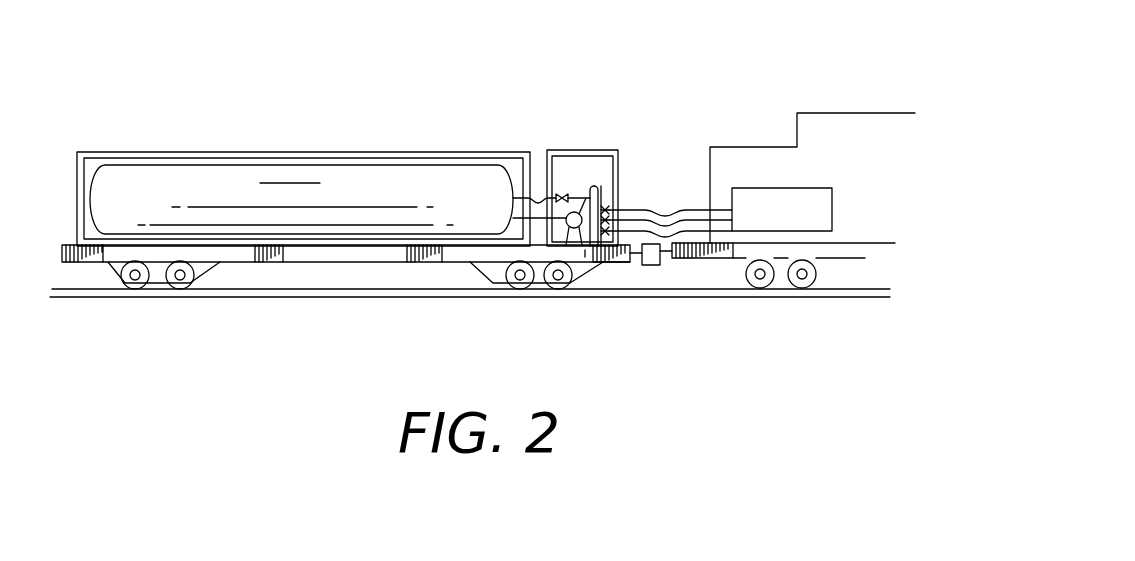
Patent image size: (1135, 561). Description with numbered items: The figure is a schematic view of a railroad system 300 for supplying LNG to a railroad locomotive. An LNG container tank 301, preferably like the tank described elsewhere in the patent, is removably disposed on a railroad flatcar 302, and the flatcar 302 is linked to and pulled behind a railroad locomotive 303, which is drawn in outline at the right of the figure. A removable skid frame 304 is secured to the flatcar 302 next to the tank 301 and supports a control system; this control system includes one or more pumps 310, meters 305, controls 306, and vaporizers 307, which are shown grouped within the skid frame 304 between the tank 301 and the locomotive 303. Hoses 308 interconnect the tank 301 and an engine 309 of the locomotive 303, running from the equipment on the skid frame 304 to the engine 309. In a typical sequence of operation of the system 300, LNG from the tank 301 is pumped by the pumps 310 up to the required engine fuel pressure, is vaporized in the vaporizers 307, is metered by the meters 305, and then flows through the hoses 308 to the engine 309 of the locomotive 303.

The system 300 is at (424, 144).
The LNG container tank 301 is at (178, 176).
The railroad flatcar 302 is at (245, 252).
The railroad locomotive 303 is at (830, 113).
The removable skid frame 304 is at (617, 168).
The meters 305 is at (593, 258).
The controls 306 is at (583, 212).
The vaporizers 307 is at (597, 185).
The hoses 308 is at (690, 229).
The engine 309 is at (802, 188).
The pumps 310 is at (513, 218).